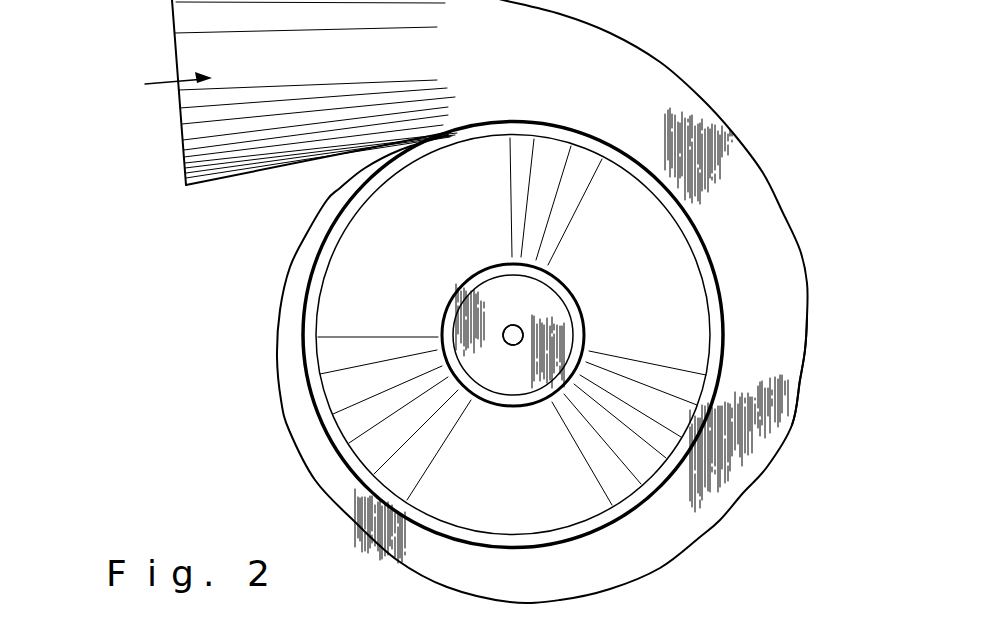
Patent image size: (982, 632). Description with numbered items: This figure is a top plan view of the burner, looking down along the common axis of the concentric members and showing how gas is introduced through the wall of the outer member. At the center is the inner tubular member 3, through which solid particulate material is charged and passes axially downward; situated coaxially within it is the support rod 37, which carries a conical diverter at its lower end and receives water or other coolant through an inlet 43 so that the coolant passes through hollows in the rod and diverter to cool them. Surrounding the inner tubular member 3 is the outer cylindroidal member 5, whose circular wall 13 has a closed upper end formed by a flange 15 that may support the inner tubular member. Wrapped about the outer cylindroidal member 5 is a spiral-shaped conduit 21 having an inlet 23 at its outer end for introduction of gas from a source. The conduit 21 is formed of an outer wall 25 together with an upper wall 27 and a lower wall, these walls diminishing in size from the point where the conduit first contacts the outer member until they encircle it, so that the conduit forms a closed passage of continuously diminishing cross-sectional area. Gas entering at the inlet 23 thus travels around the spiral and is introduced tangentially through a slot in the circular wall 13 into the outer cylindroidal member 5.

The inner tubular member 3 is at (557, 284).
The outer cylindroidal member 5 is at (333, 237).
The circular wall 13 is at (712, 316).
The flange 15 is at (445, 239).
The conduit 21 is at (688, 79).
The inlet 23 is at (172, 48).
The outer wall 25 is at (809, 370).
The upper wall 27 is at (442, 62).
The support rod 37 is at (507, 345).
The inlet 43 is at (519, 328).